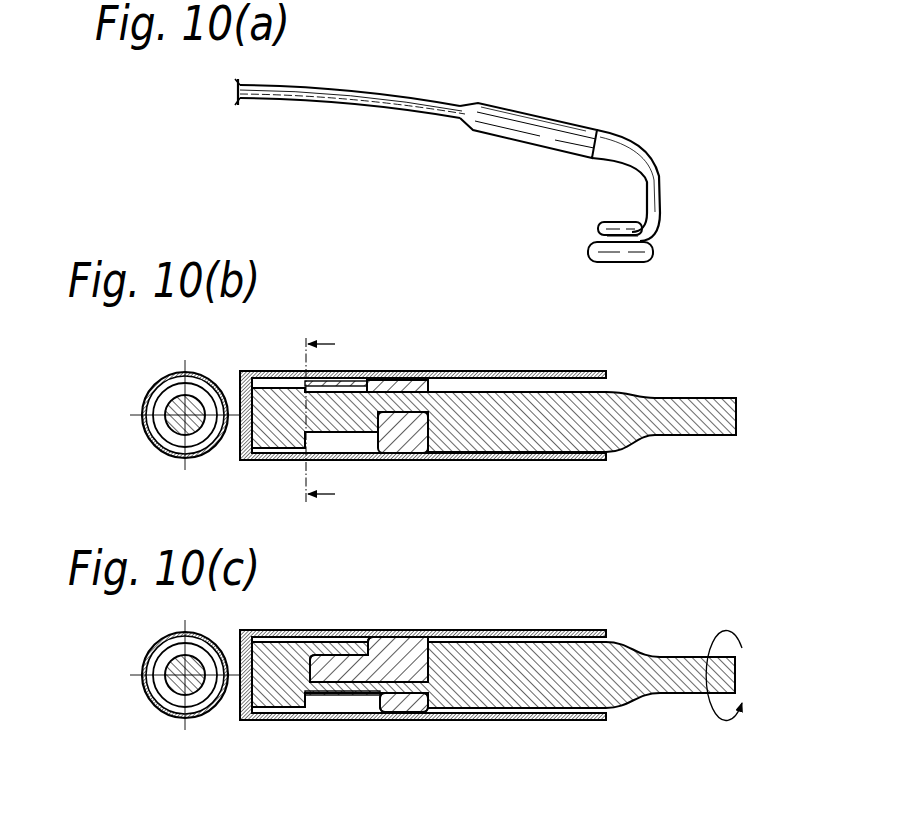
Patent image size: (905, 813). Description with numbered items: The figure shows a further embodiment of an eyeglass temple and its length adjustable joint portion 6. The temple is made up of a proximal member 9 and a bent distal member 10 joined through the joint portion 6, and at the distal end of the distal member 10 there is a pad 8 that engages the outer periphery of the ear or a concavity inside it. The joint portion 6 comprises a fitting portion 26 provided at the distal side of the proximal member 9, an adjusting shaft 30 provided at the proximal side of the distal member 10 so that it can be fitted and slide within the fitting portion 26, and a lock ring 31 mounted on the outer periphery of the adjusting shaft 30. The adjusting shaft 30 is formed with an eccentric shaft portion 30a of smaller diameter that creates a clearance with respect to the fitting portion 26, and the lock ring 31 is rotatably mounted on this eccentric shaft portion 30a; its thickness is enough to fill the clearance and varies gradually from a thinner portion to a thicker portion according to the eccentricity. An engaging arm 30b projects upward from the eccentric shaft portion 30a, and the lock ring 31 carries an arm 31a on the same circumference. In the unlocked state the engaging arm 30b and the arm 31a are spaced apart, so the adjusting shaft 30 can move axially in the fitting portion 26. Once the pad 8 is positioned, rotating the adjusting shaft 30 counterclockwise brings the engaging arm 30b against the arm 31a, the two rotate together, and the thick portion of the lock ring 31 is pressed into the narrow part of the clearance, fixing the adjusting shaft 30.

In FIG. 10A, the proximal member 9 is at (373, 96).
In FIG. 10A, the joint portion 6 is at (524, 131).
In FIG. 10A, the distal member 10 is at (664, 180).
In FIG. 10B, the distal member 10 is at (698, 395).
In FIG. 10C, the distal member 10 is at (685, 657).
In FIG. 10A, the pad 8 is at (654, 254).
In FIG. 10B, the fitting portion 26 is at (552, 372).
In FIG. 10C, the fitting portion 26 is at (552, 630).
In FIG. 10B, the adjusting shaft 30 is at (565, 428).
In FIG. 10C, the adjusting shaft 30 is at (563, 688).
In FIG. 10B, the eccentric shaft portion 30a is at (350, 422).
In FIG. 10C, the engaging arm 30b is at (345, 642).
In FIG. 10B, the lock ring 31 is at (412, 380).
In FIG. 10C, the lock ring 31 is at (415, 708).
In FIG. 10B, the arm 31a is at (345, 380).
In FIG. 10C, the arm 31a is at (352, 697).